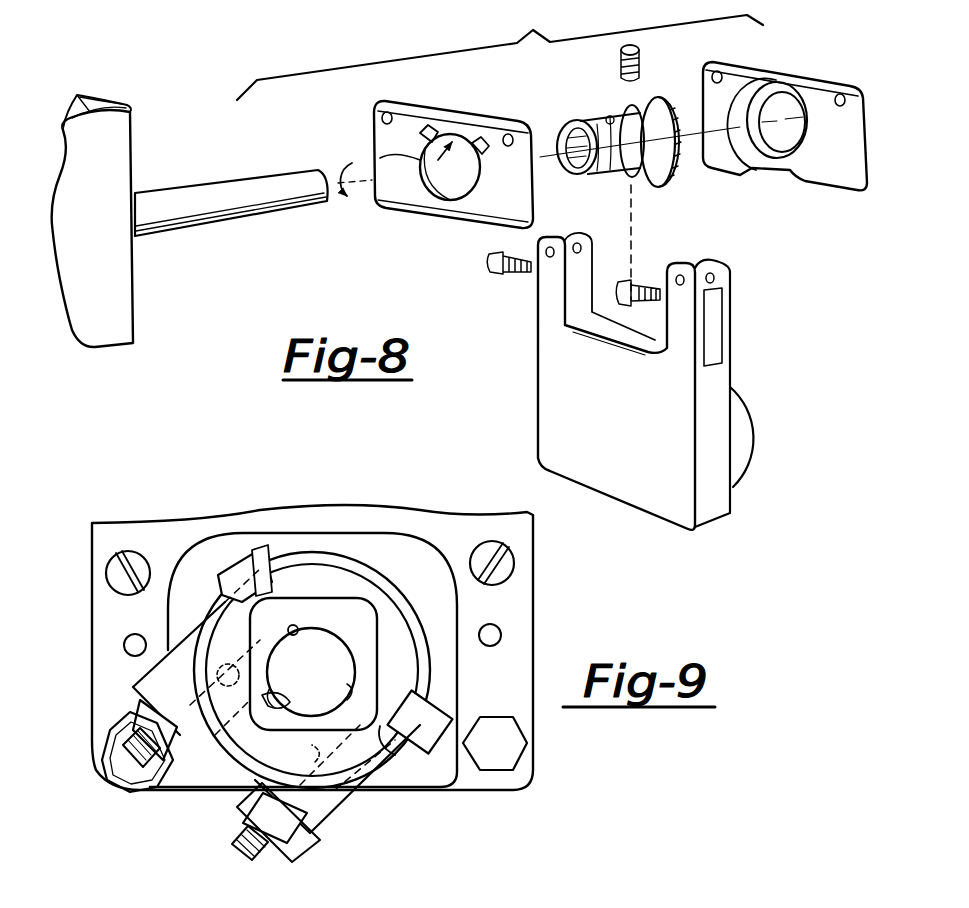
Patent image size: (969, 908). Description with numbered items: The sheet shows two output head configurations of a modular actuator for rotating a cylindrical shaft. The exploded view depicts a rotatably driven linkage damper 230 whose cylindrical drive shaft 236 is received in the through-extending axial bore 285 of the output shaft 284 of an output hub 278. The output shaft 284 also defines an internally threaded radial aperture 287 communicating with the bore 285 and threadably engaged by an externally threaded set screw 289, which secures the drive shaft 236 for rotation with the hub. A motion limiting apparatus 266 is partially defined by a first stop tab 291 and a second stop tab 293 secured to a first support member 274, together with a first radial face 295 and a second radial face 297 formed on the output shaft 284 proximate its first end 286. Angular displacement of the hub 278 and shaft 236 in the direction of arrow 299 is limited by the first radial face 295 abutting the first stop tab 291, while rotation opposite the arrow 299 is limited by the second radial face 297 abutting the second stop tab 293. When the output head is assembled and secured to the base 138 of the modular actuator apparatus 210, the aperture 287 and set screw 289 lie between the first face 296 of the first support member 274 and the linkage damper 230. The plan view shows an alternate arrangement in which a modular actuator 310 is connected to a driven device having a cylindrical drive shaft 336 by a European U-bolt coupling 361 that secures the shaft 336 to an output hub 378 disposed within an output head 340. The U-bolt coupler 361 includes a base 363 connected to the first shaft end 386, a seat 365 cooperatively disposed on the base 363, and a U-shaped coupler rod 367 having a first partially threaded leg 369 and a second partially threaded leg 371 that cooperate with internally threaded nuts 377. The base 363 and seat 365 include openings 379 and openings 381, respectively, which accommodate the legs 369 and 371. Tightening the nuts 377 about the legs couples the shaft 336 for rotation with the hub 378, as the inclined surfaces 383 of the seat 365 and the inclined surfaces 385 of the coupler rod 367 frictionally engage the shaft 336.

In FIG. 8, the linkage damper 230 is at (135, 32).
In FIG. 8, the cylindrical drive shaft 236 is at (246, 192).
In FIG. 8, the arrow 299 is at (357, 201).
In FIG. 8, the first stop tab 291 is at (375, 160).
In FIG. 8, the first face 296 is at (409, 112).
In FIG. 8, the motion limiting apparatus 266 is at (432, 208).
In FIG. 8, the first support member 274 is at (487, 218).
In FIG. 8, the second stop tab 293 is at (480, 162).
In FIG. 8, the first radial face 295 is at (557, 150).
In FIG. 8, the first end 286 is at (585, 138).
In FIG. 8, the output shaft 284 is at (592, 106).
In FIG. 8, the through-extending axial bore 285 is at (605, 178).
In FIG. 8, the second radial face 297 is at (640, 168).
In FIG. 8, the internally threaded radial aperture 287 is at (640, 100).
In FIG. 8, the set screw 289 is at (643, 62).
In FIG. 8, the output hub 278 is at (676, 179).
In FIG. 8, the base 138 is at (538, 384).
In FIG. 8, the modular actuator apparatus 210 is at (742, 272).
In FIG. 9, the modular actuator 310 is at (190, 522).
In FIG. 9, the output head 340 is at (484, 794).
In FIG. 9, the European U-bolt coupling 361 is at (416, 764).
In FIG. 9, the output hub 378 is at (426, 614).
In FIG. 9, the U-shaped coupler rod 367 is at (388, 671).
In FIG. 9, the inclined surfaces 385 is at (293, 576).
In FIG. 9, the seat 365 is at (168, 606).
In FIG. 9, the cylindrical drive shaft 336 is at (328, 678).
In FIG. 9, the first shaft end 386 is at (292, 626).
In FIG. 9, the inclined surfaces 383 is at (260, 719).
In FIG. 9, the openings 381 is at (312, 750).
In FIG. 9, the openings 379 is at (131, 687).
In FIG. 9, the internally threaded nuts 377 is at (140, 708).
In FIG. 9, the second partially threaded leg 371 is at (232, 858).
In FIG. 9, the first partially threaded leg 369 is at (100, 782).
In FIG. 9, the base 363 is at (342, 805).